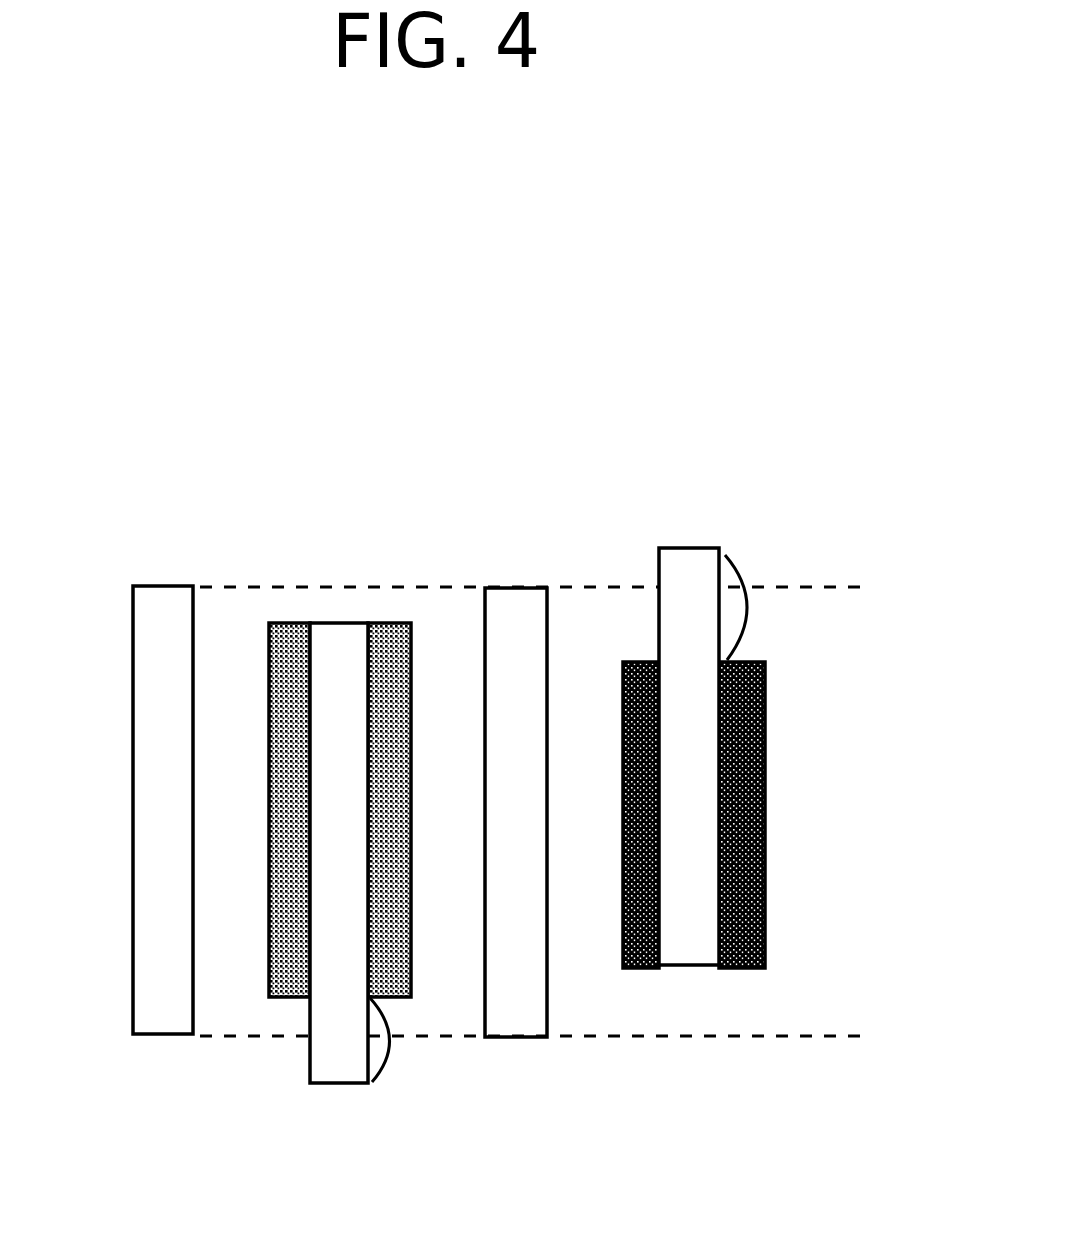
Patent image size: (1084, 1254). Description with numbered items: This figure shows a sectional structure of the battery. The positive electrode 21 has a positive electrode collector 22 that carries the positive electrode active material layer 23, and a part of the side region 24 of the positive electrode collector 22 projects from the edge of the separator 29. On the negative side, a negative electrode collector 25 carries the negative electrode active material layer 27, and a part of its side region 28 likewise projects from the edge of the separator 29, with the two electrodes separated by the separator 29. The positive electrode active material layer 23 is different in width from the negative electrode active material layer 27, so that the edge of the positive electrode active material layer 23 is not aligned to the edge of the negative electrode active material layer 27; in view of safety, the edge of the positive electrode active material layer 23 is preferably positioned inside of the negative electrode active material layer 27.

The positive electrode 21 is at (779, 772).
The positive electrode collector 22 is at (688, 933).
The positive electrode active material layer 23 is at (765, 842).
The side region 24 is at (752, 588).
The negative electrode current collector 25 is at (325, 615).
The negative electrode active material layer 27 is at (270, 998).
The side region 28 is at (390, 1065).
The separator 29 is at (167, 615).